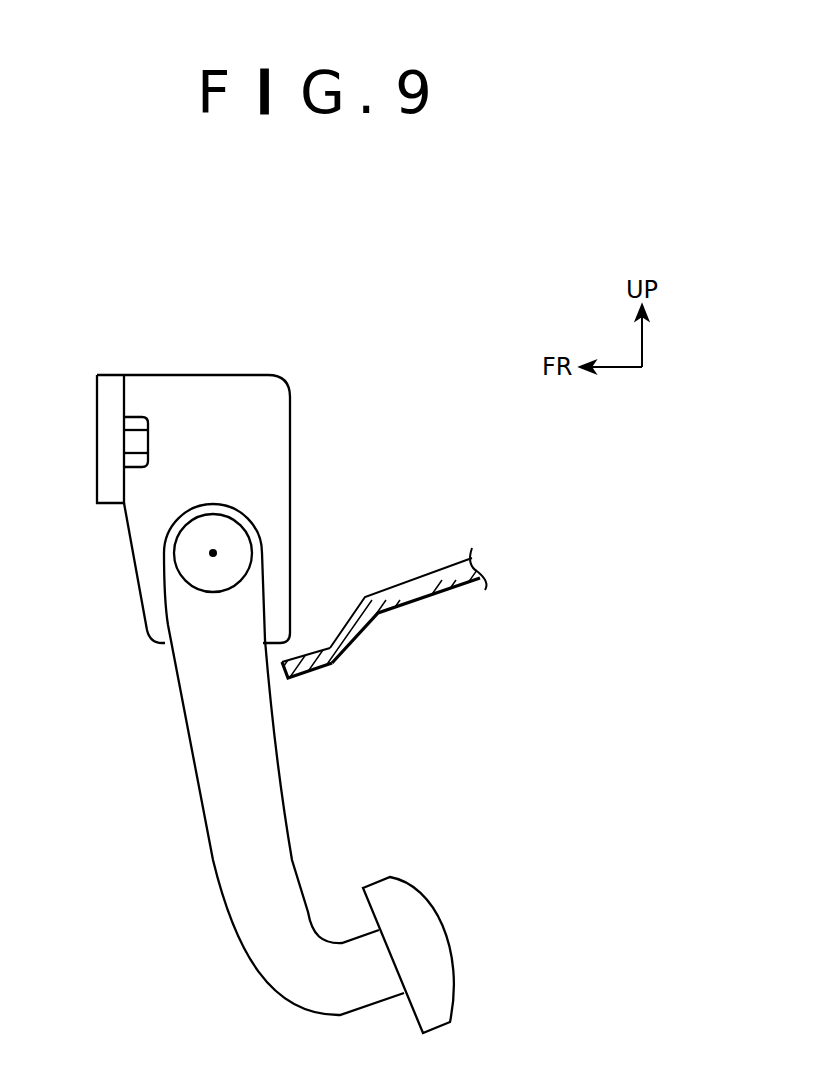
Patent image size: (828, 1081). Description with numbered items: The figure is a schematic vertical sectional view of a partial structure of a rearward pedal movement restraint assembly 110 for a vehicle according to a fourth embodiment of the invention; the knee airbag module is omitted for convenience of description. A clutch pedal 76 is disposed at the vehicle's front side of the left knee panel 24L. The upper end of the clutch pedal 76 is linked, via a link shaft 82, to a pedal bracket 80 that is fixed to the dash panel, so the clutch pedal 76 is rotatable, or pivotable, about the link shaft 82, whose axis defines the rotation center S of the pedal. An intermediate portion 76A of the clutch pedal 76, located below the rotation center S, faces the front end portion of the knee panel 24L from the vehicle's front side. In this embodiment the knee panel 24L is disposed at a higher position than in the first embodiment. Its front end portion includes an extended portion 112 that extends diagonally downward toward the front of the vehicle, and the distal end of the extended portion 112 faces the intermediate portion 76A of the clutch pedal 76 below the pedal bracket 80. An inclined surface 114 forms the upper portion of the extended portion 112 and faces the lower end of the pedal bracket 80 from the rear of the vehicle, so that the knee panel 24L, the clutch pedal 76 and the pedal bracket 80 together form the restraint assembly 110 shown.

The rearward pedal movement restraint assembly 110 is at (348, 440).
The pedal bracket 80 is at (200, 373).
The link shaft 82 is at (187, 511).
The rotation center S is at (213, 553).
The clutch pedal 76 is at (200, 817).
The intermediate portion 76A is at (177, 705).
The left knee panel 24L is at (417, 578).
The inclined surface 114 is at (338, 632).
The extended portion 112 is at (342, 657).